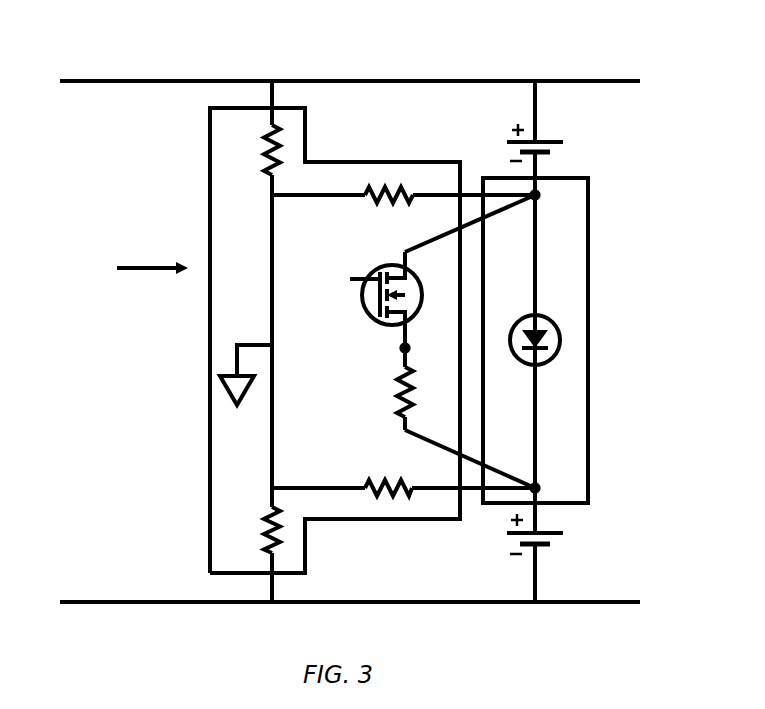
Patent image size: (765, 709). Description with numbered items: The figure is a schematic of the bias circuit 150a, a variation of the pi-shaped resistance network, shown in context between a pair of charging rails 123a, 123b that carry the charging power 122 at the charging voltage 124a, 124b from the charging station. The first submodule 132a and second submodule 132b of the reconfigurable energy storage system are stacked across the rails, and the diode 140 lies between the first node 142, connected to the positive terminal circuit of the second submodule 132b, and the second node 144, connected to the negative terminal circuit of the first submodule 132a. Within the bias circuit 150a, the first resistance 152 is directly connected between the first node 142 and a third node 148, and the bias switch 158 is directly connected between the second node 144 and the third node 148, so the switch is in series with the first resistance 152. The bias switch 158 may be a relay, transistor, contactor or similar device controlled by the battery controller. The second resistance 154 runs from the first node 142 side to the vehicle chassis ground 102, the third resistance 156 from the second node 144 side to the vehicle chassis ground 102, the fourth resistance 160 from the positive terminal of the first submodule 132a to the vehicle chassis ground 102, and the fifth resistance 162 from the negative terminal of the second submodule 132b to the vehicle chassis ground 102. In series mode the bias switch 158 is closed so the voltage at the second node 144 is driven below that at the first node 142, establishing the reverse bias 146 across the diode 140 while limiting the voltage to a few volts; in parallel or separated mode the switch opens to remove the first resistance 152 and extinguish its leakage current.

The charging rail 123a is at (350, 51).
The charging voltage (positive side) 124a is at (183, 80).
The charging rail 123b is at (349, 571).
The charging voltage (negative side) 124b is at (137, 601).
The fourth resistance 160 is at (265, 143).
The fifth resistance 162 is at (262, 538).
The bias circuit 150a is at (348, 161).
The third resistance 156 is at (408, 190).
The second resistance 154 is at (412, 498).
The bias switch 158 is at (375, 268).
The third node 148 is at (400, 350).
The first resistance 152 is at (400, 405).
The vehicle chassis ground 102 is at (240, 406).
The charging power 122 is at (172, 258).
The first submodule 132a is at (555, 141).
The second submodule 132b is at (552, 546).
The diode 140 is at (590, 194).
The second node 144 is at (541, 197).
The first node 142 is at (541, 487).
The reverse bias 146 is at (548, 468).